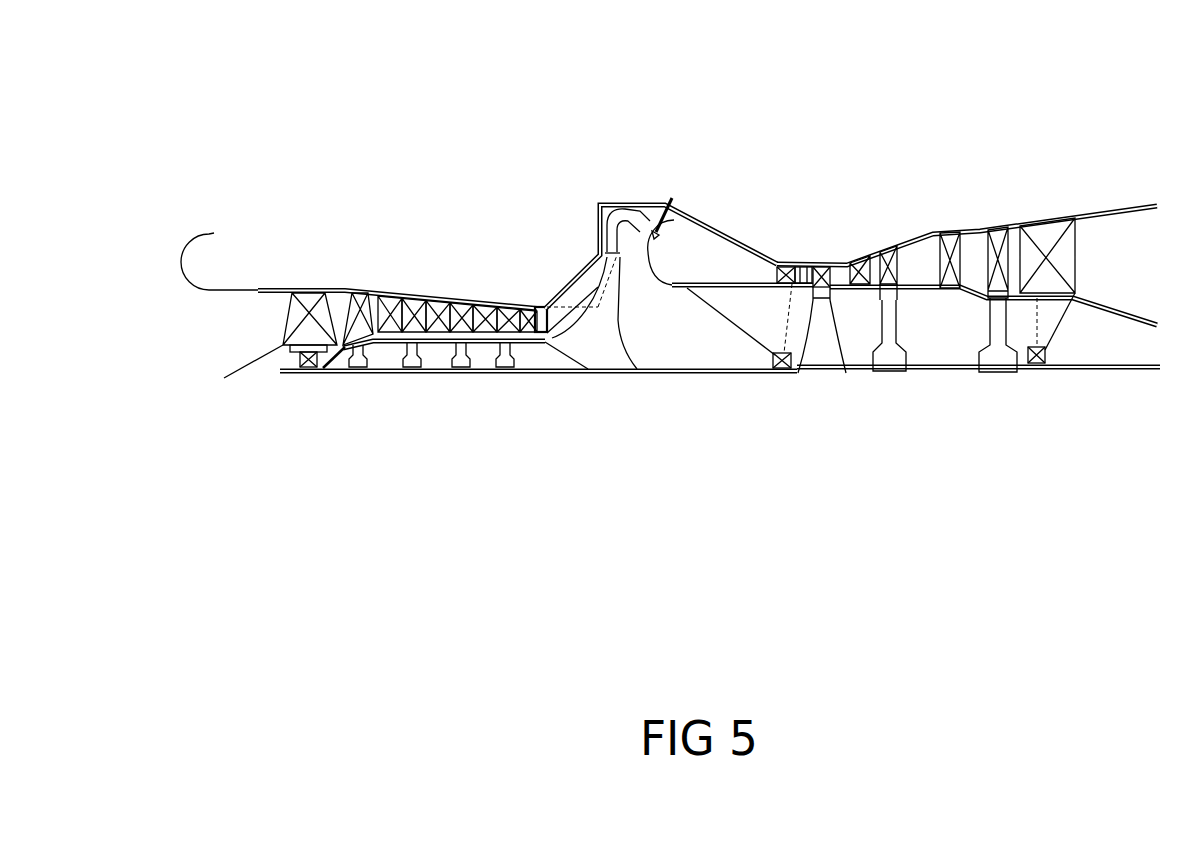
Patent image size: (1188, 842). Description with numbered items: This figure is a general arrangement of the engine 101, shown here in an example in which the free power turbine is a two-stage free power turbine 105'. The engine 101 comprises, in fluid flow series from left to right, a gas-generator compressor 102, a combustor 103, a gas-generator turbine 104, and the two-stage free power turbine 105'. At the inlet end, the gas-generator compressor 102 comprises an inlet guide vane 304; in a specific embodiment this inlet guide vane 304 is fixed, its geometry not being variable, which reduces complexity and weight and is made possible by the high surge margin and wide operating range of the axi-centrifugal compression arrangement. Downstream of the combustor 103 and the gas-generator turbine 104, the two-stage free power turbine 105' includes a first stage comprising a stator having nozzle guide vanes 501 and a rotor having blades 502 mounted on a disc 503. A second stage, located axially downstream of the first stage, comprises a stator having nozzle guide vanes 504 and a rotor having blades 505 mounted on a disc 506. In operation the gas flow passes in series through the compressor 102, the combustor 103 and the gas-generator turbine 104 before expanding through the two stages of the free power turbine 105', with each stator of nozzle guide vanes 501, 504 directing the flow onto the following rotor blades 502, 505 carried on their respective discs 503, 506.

The engine 101 is at (380, 80).
The gas-generator compressor 102 is at (470, 256).
The combustor 103 is at (690, 196).
The gas-generator turbine 104 is at (781, 232).
The two-stage free power turbine 105' is at (967, 234).
The inlet guide vane 304 is at (307, 289).
The nozzle guide vanes 501 is at (858, 254).
The blades 502 is at (888, 238).
The disc 503 is at (892, 360).
The nozzle guide vanes 504 is at (951, 229).
The blades 505 is at (1003, 226).
The disc 506 is at (1003, 360).